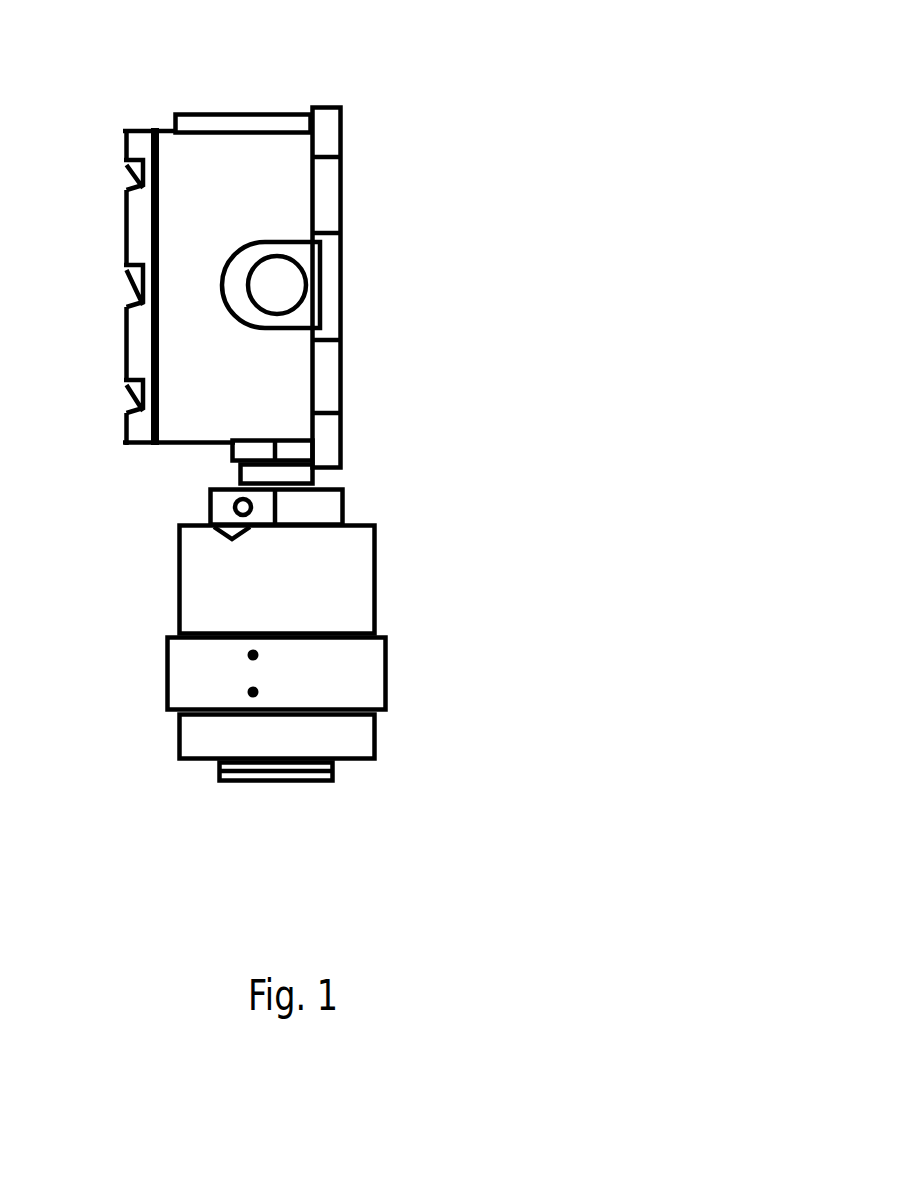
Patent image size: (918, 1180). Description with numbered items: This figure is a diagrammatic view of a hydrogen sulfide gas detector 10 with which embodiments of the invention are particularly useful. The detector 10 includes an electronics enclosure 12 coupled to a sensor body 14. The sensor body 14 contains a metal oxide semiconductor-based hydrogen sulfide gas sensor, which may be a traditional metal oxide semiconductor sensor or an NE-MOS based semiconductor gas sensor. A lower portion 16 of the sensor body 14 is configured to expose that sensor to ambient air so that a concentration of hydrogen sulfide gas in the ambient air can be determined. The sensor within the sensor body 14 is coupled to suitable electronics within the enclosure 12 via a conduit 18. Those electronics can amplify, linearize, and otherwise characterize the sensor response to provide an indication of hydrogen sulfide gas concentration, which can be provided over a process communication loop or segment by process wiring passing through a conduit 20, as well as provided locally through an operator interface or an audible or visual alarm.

The detector 10 is at (547, 93).
The electronics enclosure 12 is at (256, 112).
The sensor body 14 is at (377, 571).
The lower portion 16 is at (305, 780).
The conduit 18 is at (237, 467).
The conduit 20 is at (305, 262).